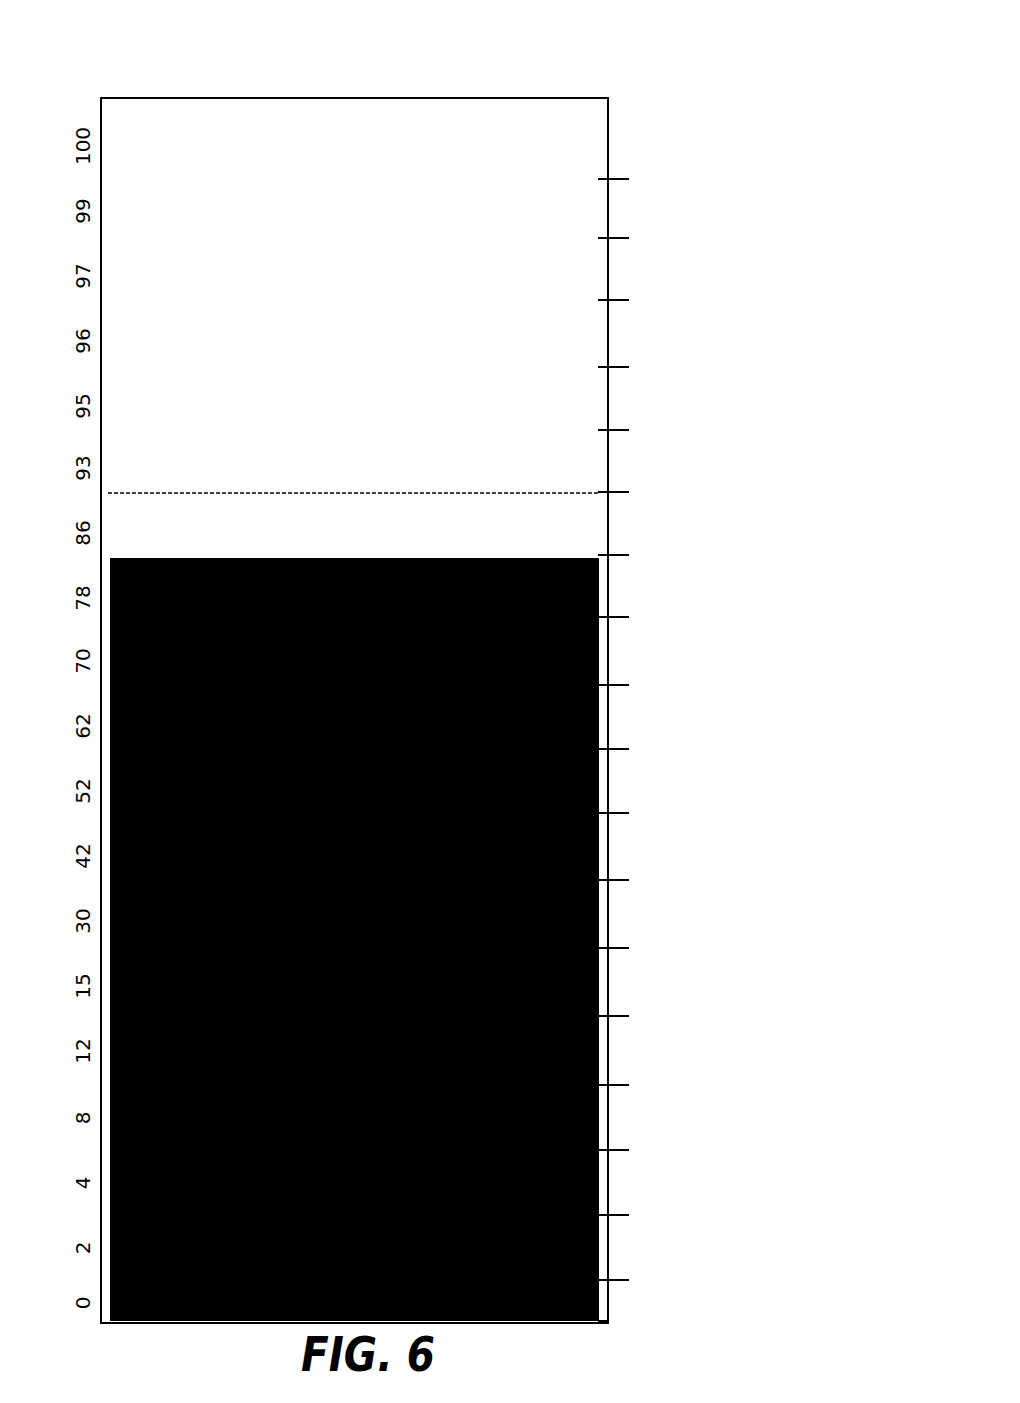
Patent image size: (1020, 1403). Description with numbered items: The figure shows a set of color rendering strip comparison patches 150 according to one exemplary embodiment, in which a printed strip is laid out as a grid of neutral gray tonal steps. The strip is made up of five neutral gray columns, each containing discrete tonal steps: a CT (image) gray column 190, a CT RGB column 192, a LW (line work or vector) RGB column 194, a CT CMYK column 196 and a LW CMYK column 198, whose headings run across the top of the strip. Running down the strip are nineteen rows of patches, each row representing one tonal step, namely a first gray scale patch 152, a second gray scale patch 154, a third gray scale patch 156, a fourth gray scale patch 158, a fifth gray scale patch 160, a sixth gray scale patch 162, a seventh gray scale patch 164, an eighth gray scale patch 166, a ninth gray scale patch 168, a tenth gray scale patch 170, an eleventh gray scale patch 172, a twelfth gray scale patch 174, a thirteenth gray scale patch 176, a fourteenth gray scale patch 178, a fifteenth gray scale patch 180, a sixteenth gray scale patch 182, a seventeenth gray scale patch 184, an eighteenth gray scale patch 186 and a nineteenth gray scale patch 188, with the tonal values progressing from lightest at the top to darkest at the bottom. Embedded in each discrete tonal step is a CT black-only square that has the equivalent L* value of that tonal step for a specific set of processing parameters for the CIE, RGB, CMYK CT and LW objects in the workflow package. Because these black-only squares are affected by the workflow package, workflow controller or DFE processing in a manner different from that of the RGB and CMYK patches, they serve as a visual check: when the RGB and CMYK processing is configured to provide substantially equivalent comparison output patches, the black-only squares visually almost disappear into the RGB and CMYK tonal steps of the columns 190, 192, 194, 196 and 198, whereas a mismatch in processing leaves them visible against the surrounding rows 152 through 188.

The banding comparison chart 150 is at (652, 32).
The first gray scale patch 152 is at (624, 140).
The second gray scale patch 154 is at (624, 203).
The third gray scale patch 156 is at (624, 266).
The fourth gray scale patch 158 is at (624, 328).
The fifth gray scale patch 160 is at (624, 394).
The sixth gray scale patch 162 is at (624, 458).
The seventh gray scale patch 164 is at (624, 518).
The eighth gray scale patch 166 is at (624, 586).
The ninth gray scale patch 168 is at (624, 646).
The tenth gray scale patch 170 is at (624, 711).
The eleventh gray scale patch 172 is at (624, 777).
The twelfth gray scale patch 174 is at (624, 843).
The thirteenth gray scale patch 176 is at (624, 912).
The fourteenth gray scale patch 178 is at (624, 979).
The fifteenth gray scale patch 180 is at (624, 1045).
The sixteenth gray scale patch 182 is at (624, 1111).
The seventeenth gray scale patch 184 is at (624, 1178).
The eighteenth gray scale patch 186 is at (624, 1244).
The nineteenth gray scale patch 188 is at (624, 1298).
The CT gray column 190 is at (137, 46).
The CT RGB column 192 is at (231, 46).
The LW RGB column 194 is at (325, 46).
The CT CMYK column 196 is at (436, 46).
The LW CMYK column 198 is at (541, 46).